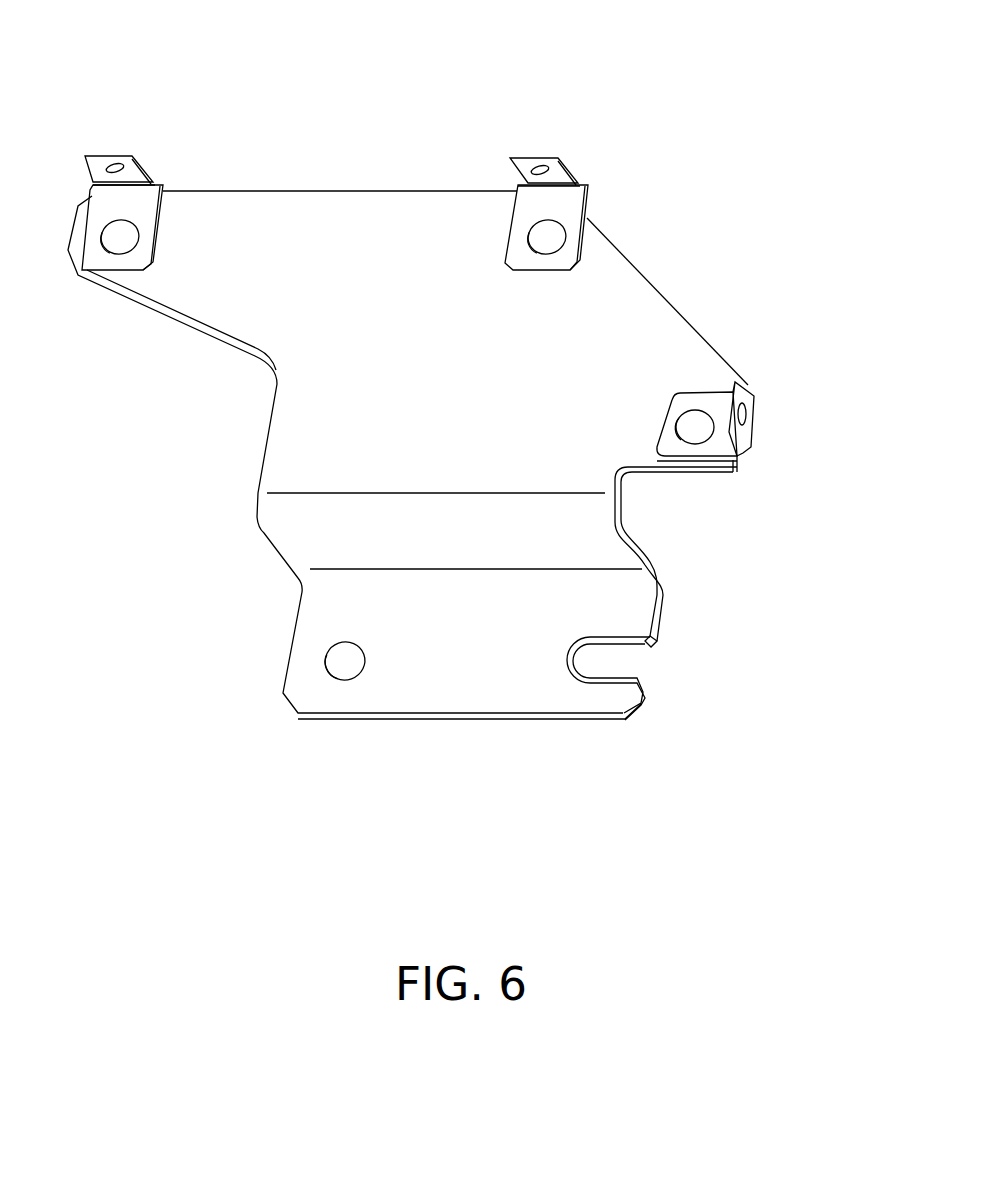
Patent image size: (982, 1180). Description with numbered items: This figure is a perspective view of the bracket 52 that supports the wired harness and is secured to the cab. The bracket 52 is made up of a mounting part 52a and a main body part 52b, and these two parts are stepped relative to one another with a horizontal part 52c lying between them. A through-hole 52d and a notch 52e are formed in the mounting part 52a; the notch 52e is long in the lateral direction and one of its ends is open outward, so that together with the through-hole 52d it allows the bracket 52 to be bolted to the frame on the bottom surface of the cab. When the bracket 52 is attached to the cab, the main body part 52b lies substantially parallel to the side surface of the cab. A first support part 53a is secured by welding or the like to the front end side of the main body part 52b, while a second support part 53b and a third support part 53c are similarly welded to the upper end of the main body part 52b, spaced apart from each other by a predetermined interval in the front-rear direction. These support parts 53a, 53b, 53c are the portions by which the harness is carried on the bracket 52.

The bracket 52 is at (426, 121).
The mounting part 52a is at (455, 662).
The main body part 52b is at (627, 318).
The horizontal part 52c is at (643, 547).
The through-hole 52d is at (323, 662).
The notch 52e is at (612, 678).
The first support part 53a is at (743, 429).
The second support part 53b is at (565, 158).
The third support part 53c is at (97, 153).